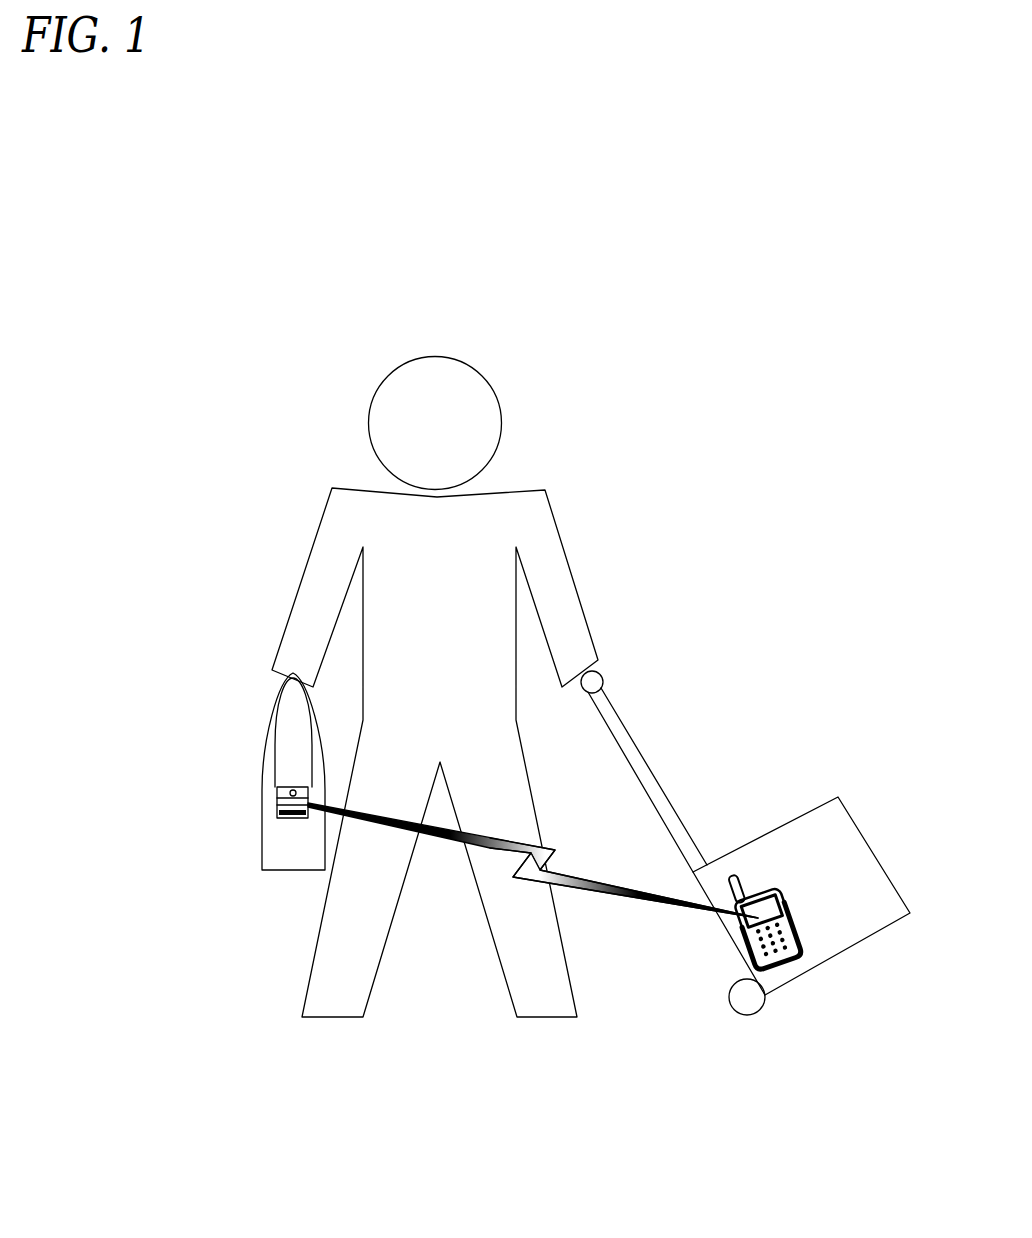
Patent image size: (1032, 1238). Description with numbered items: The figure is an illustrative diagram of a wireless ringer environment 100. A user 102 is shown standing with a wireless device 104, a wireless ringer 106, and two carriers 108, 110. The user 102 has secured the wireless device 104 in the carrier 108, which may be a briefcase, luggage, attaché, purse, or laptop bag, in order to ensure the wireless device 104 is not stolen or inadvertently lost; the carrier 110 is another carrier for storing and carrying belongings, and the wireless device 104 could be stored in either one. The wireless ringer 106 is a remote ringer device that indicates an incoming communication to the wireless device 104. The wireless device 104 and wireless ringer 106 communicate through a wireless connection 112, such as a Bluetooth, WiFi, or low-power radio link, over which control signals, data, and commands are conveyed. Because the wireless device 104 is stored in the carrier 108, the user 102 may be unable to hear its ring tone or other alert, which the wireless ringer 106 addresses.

The wireless ringer environment 100 is at (720, 202).
The user 102 is at (552, 485).
The wireless device 104 is at (803, 962).
The wireless ringer 106 is at (283, 807).
The carrier 108 is at (838, 797).
The carrier 110 is at (272, 770).
The wireless connection 112 is at (533, 860).